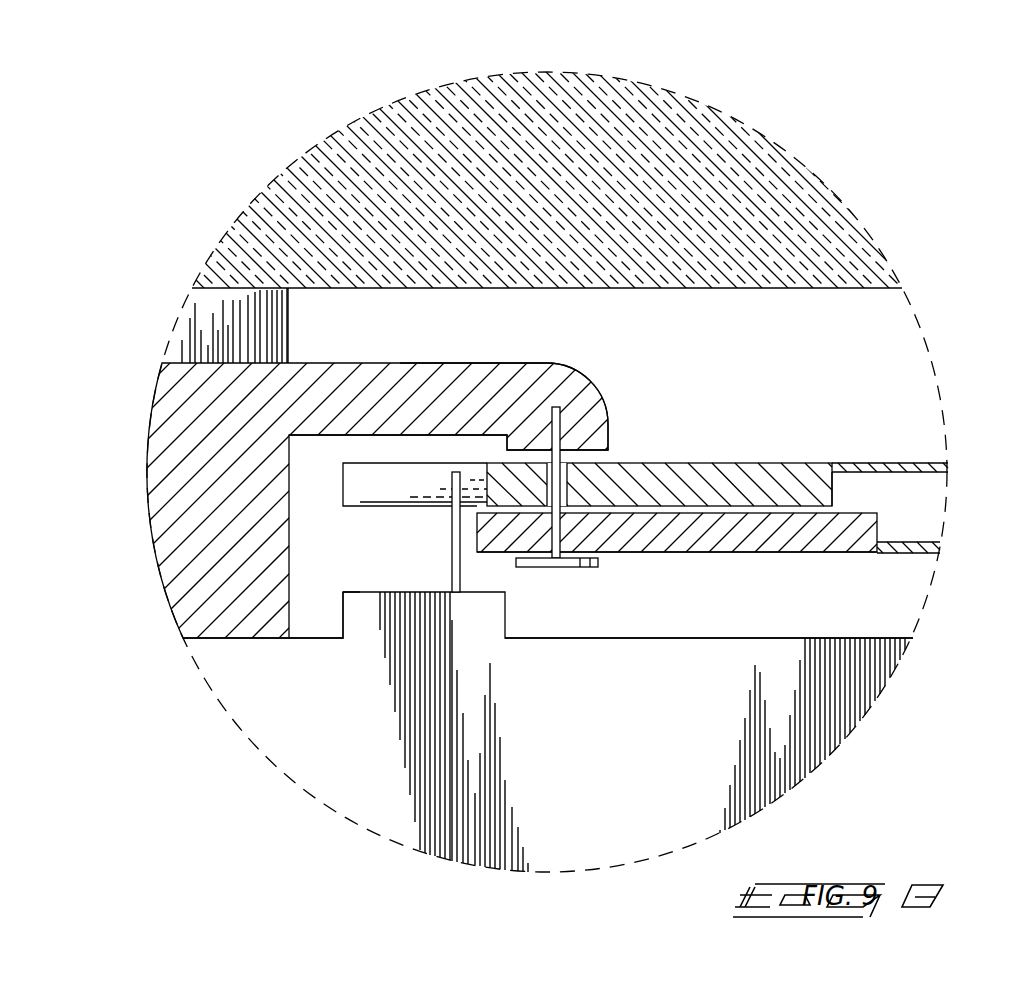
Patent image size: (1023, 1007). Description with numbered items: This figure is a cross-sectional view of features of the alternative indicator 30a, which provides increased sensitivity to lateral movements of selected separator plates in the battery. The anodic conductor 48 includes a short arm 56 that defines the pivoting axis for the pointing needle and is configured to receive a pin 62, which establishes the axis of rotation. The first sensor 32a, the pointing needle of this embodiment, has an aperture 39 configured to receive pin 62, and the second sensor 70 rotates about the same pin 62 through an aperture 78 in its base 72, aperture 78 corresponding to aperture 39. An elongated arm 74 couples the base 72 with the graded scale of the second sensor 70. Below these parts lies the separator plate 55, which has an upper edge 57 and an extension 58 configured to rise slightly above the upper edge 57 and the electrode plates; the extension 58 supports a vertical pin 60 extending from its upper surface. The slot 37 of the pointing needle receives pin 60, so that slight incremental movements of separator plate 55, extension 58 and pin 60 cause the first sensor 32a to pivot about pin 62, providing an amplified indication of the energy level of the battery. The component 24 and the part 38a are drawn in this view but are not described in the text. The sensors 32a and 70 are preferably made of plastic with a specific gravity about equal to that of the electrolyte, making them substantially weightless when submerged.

The cover 24 is at (564, 187).
The indicator 30a is at (950, 304).
The first sensor 32a is at (872, 458).
The slot 37 is at (372, 483).
The latch member 38a is at (745, 490).
The aperture 39 is at (603, 487).
The anodic conductor 48 is at (230, 525).
The separator plate 55 is at (597, 760).
The arm 56 is at (414, 400).
The upper edge 57 is at (668, 637).
The extension 58 is at (363, 618).
The pin 60 is at (452, 573).
The pin 62 is at (561, 422).
The second sensor 70 is at (830, 566).
The base 72 is at (785, 528).
The elongated arm 74 is at (900, 543).
The aperture 78 is at (567, 530).